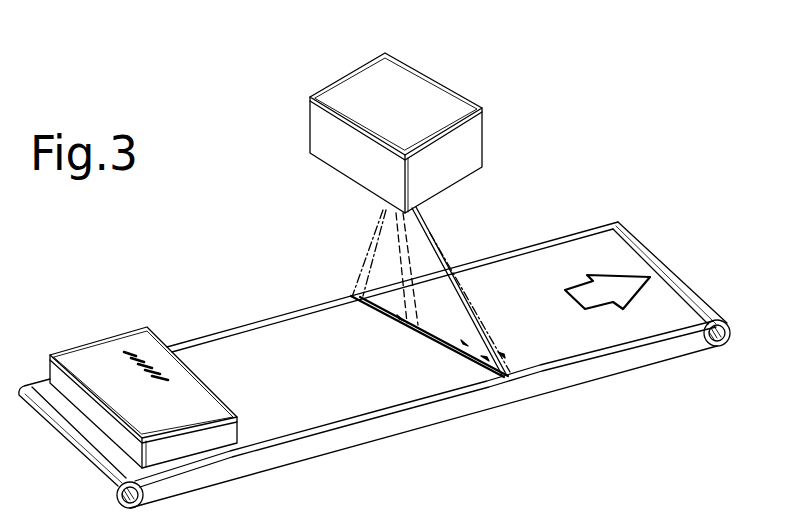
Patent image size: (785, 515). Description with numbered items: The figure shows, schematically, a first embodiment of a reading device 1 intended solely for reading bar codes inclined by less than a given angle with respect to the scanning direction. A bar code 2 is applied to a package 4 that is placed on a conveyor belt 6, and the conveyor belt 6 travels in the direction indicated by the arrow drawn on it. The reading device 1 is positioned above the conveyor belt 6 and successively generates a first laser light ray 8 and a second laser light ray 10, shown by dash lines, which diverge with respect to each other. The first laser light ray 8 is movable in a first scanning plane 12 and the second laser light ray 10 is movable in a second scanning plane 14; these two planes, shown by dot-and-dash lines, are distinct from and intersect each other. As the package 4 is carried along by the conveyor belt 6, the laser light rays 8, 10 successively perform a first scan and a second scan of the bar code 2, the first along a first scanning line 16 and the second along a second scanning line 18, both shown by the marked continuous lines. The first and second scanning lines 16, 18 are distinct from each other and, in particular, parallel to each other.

The reading device 1 is at (458, 63).
The bar code 2 is at (136, 344).
The package 4 is at (74, 364).
The conveyor belt 6 is at (248, 352).
The first laser light ray 8 is at (388, 239).
The second laser light ray 10 is at (418, 246).
The first scanning plane 12 is at (473, 387).
The second scanning plane 14 is at (514, 357).
The first scanning line 16 is at (433, 352).
The second scanning line 18 is at (512, 380).